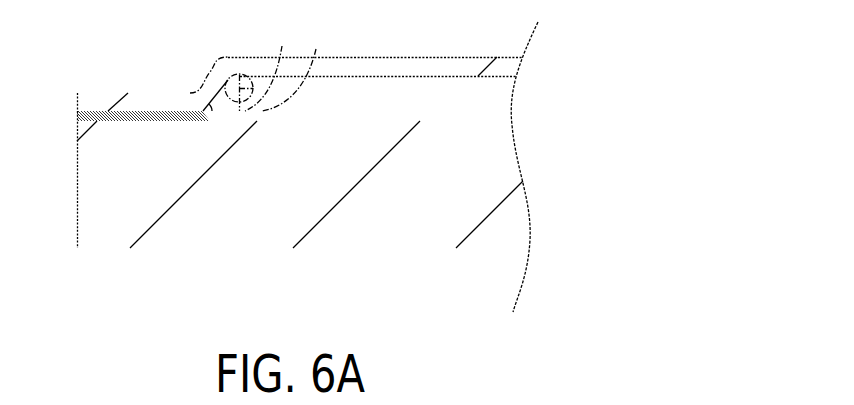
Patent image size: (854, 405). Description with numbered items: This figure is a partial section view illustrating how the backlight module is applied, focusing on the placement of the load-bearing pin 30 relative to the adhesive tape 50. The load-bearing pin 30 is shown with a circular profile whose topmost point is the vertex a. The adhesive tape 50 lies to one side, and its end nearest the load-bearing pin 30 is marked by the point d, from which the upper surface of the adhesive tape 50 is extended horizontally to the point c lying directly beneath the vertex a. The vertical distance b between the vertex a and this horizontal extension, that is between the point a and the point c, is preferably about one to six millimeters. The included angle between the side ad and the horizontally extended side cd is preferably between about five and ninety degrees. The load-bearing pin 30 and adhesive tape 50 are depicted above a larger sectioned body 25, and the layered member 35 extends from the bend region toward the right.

The substrate / base block 25 is at (273, 230).
The load-bearing pin 30 is at (244, 76).
The film / flexible layer 35 is at (385, 67).
The adhesive tape 50 is at (77, 117).
The vertex of the circular profile a is at (238, 75).
The vertical distance b is at (266, 70).
The point c is at (290, 71).
The point d is at (200, 110).